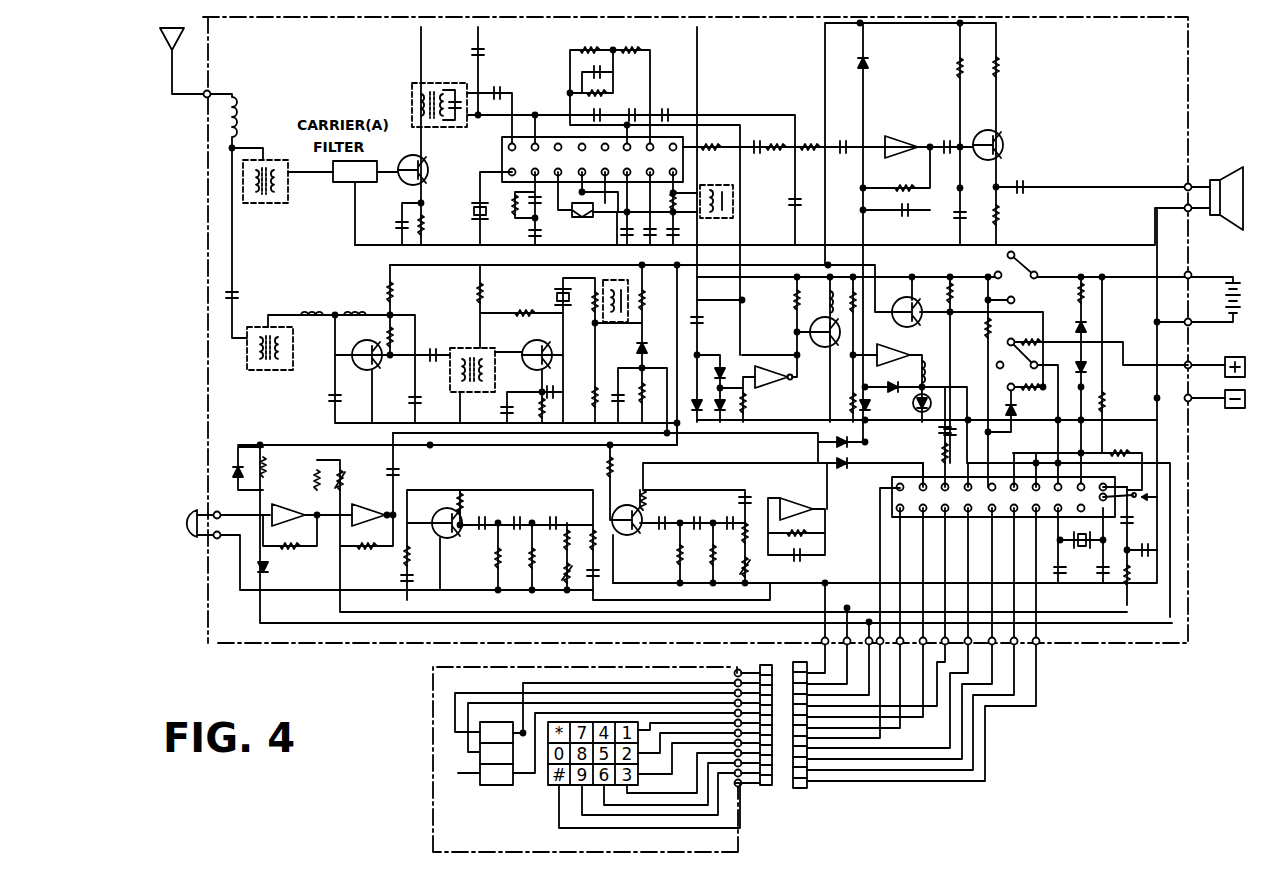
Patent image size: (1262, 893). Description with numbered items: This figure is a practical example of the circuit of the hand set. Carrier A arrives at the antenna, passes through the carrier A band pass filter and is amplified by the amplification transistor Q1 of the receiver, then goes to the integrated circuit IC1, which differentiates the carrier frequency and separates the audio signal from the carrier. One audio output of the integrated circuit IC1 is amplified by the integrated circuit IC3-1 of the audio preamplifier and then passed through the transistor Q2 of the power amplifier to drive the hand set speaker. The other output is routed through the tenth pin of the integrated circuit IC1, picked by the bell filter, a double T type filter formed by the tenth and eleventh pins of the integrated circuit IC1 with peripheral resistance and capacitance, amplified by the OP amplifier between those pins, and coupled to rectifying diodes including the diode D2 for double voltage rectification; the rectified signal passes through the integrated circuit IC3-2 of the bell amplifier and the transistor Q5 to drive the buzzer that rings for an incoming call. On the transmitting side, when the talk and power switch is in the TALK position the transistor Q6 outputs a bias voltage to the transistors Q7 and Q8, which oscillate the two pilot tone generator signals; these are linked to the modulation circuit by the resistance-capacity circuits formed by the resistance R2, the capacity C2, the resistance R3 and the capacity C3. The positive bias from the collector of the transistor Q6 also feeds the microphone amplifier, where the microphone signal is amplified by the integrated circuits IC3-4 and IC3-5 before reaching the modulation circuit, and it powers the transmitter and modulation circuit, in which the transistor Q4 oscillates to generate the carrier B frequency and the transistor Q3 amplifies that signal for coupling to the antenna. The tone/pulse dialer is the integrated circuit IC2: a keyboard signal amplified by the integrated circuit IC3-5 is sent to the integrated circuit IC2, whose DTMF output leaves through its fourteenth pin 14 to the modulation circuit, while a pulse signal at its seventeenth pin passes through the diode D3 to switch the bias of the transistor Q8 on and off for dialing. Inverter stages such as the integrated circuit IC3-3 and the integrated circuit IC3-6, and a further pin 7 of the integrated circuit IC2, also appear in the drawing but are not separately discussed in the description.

The amplification transistor Q1 is at (427, 170).
The transistor of power amplifier Q2 is at (1002, 147).
The transistor Q3 is at (365, 347).
The transistor Q4 is at (534, 347).
The transistor Q5 is at (821, 344).
The transistor Q6 is at (914, 304).
The transistor Q7 is at (447, 517).
The transistor Q8 is at (628, 514).
The integrated circuit IC1 is at (502, 150).
The integrated circuit IC2 is at (892, 500).
The integrated circuit IC3-1 is at (893, 159).
The integrated circuit IC3-2 is at (774, 391).
The inverter IC3-3 is at (893, 355).
The integrated circuit IC3-4 is at (286, 524).
The integrated circuit IC3-5 is at (364, 524).
The inverter IC3-6 is at (790, 500).
The diode D2 is at (701, 389).
The diode D3 is at (835, 452).
The resistance R2 is at (601, 540).
The resistance R3 is at (416, 556).
The capacity C2 is at (600, 576).
The capacity C3 is at (414, 580).
The 14th pin of IC2 14 is at (1103, 485).
The IC2 pin 7 is at (1130, 504).